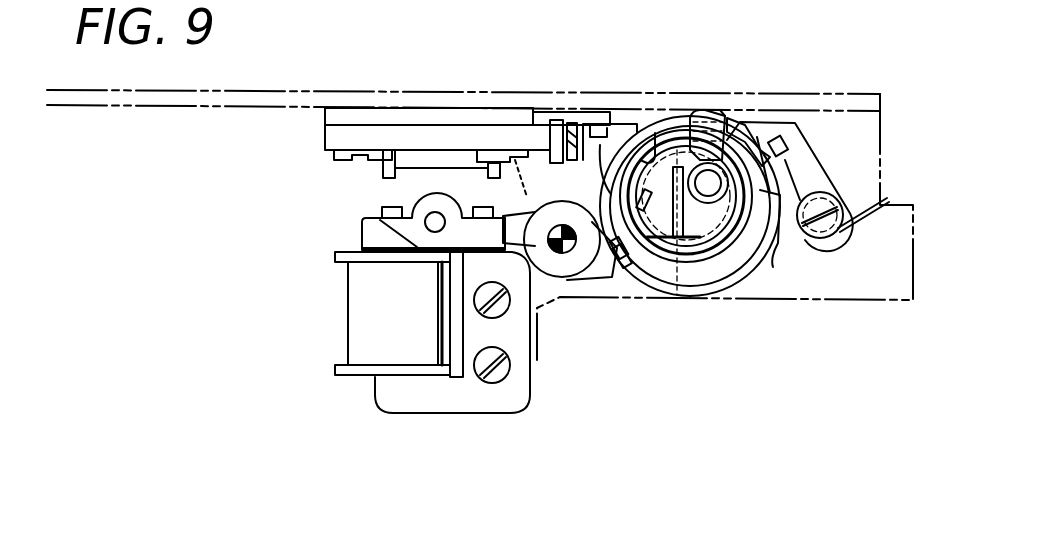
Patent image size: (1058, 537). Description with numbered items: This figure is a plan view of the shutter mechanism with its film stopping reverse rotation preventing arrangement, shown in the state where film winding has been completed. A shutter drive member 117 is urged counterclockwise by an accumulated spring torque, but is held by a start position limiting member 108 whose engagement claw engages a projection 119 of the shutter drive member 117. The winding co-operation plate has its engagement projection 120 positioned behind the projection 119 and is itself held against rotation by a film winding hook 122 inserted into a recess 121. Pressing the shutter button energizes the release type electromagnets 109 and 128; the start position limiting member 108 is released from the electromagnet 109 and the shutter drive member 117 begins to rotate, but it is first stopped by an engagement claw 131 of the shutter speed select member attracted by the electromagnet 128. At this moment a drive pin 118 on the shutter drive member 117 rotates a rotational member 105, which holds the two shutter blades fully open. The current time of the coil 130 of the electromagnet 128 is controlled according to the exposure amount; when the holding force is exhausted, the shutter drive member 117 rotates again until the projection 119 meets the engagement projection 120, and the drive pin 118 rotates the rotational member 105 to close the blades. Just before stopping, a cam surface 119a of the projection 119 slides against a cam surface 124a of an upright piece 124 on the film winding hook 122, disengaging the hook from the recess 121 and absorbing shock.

The rotational member 105 is at (733, 285).
The start position limiting member 108 is at (594, 115).
The release type electromagnet 109 is at (437, 119).
The shutter drive member 117 is at (581, 194).
The drive pin 118 is at (662, 240).
The projection 119 is at (696, 103).
The cam surface 119a is at (720, 74).
The engagement projection 120 is at (767, 243).
The recess 121 is at (738, 115).
The film winding hook 122 is at (807, 145).
The upright piece 124 is at (800, 182).
The cam surface 124a is at (798, 240).
The release type electromagnet 128 is at (412, 417).
The coil 130 is at (360, 320).
The engagement claw 131 is at (616, 270).